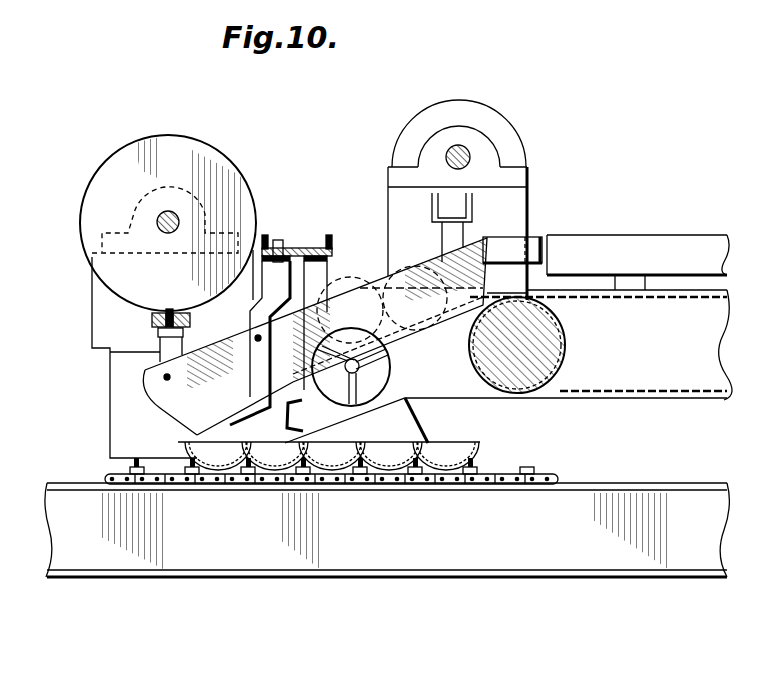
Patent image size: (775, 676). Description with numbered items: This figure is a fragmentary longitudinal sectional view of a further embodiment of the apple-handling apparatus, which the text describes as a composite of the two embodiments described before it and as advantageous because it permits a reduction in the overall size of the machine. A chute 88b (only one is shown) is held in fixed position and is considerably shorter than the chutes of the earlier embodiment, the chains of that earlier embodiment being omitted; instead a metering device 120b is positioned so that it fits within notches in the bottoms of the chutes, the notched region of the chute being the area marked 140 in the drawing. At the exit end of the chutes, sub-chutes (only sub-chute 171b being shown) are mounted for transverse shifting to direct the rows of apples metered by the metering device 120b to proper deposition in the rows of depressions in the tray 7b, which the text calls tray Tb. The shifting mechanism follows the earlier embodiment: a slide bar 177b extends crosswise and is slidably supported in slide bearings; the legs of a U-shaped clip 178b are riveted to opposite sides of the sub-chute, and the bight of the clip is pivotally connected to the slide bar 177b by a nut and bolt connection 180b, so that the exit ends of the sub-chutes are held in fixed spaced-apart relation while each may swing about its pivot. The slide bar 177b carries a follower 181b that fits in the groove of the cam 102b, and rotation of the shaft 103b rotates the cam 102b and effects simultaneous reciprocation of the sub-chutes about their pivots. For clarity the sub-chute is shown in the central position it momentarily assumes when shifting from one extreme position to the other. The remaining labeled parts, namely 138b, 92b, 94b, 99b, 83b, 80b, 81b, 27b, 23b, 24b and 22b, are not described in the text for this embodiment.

The cam 102b is at (95, 175).
The shaft 103b is at (157, 221).
The follower 181b is at (170, 311).
The slide bar 177b is at (150, 320).
The nut and bolt connection 180b is at (158, 333).
The U-shaped clip 178b is at (165, 356).
The sub-chute 171b is at (172, 389).
The chute 88b is at (357, 285).
The chute 140 is at (400, 304).
The metering device 120b is at (398, 367).
The pivot shaft 138b is at (470, 151).
The bracket 92b is at (470, 206).
The stem 94b is at (452, 240).
The coupling 99b is at (542, 252).
The beam 83b is at (683, 255).
The roller 80b is at (553, 330).
The belt 81b is at (657, 390).
The tray 7b is at (459, 438).
The pedestal 27b is at (528, 462).
The chain 23b is at (556, 467).
The chain pin 24b is at (527, 482).
The conveyor base 22b is at (672, 503).